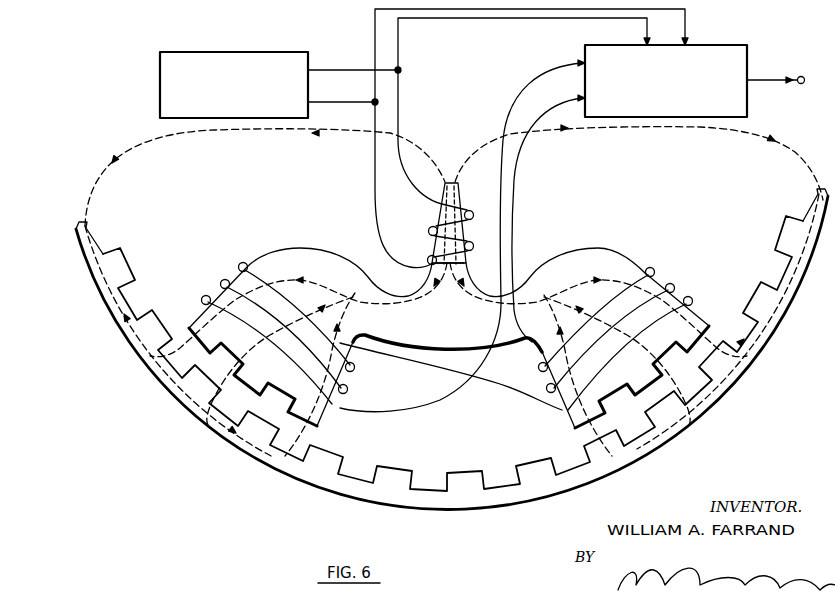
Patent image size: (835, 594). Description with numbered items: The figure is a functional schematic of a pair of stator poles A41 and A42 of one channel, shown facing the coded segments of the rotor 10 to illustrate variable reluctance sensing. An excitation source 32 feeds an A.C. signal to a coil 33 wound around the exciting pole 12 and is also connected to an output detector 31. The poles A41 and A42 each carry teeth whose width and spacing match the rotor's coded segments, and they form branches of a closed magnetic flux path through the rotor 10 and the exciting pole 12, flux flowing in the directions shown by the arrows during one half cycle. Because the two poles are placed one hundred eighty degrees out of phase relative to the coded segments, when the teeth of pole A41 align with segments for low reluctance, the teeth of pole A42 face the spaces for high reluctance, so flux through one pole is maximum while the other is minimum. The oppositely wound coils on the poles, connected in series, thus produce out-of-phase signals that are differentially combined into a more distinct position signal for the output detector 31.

The rotor 10 is at (718, 405).
The exciting pole 12 is at (458, 186).
The output detector 31 is at (722, 45).
The excitation source 32 is at (224, 52).
The coil 33 is at (478, 242).
The pole A41 is at (697, 318).
The pole A42 is at (322, 420).